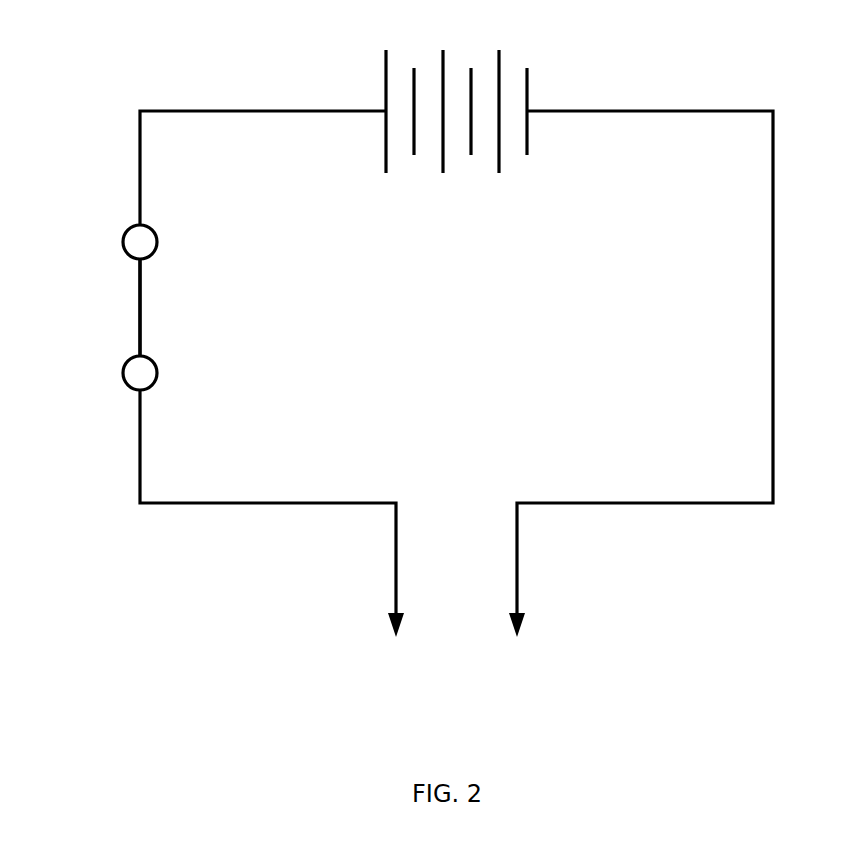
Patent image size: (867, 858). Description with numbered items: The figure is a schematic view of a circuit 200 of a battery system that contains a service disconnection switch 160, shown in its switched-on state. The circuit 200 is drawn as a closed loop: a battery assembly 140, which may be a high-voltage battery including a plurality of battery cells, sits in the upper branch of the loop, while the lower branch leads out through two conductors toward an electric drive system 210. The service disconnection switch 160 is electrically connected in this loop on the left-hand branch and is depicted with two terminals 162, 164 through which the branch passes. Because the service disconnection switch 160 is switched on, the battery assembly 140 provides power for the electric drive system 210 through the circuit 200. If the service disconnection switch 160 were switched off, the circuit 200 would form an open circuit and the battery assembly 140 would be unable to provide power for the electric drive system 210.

The circuit 200 is at (638, 62).
The battery assembly 140 is at (385, 75).
The service disconnection switch 160 is at (183, 243).
The first contactor 162 is at (140, 326).
The second contactor 164 is at (123, 373).
The electric drive system 210 is at (459, 674).